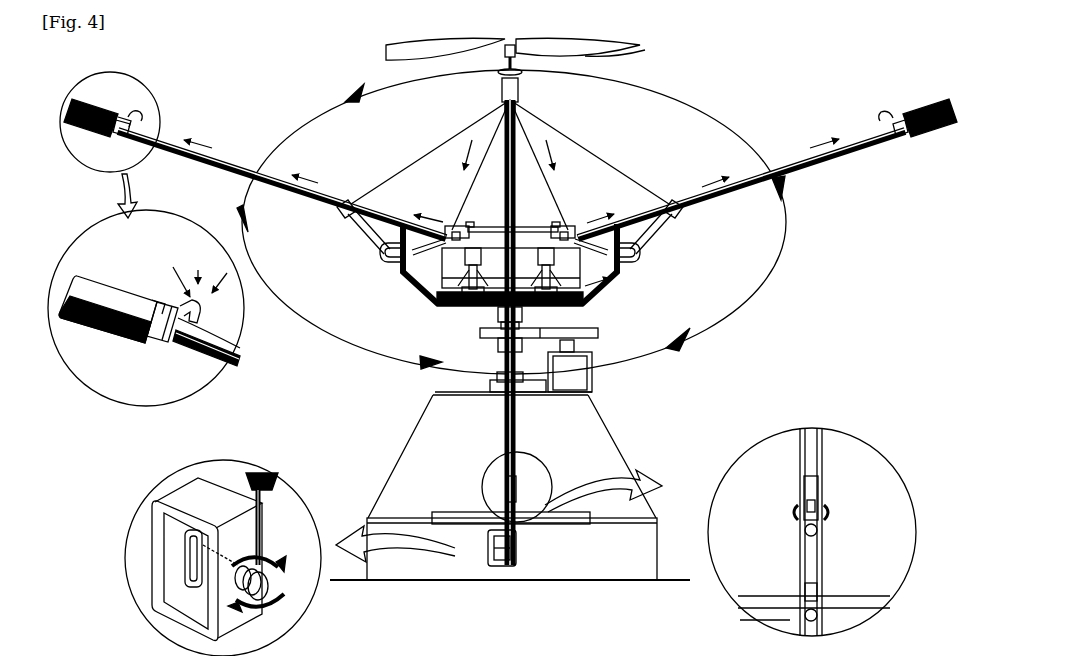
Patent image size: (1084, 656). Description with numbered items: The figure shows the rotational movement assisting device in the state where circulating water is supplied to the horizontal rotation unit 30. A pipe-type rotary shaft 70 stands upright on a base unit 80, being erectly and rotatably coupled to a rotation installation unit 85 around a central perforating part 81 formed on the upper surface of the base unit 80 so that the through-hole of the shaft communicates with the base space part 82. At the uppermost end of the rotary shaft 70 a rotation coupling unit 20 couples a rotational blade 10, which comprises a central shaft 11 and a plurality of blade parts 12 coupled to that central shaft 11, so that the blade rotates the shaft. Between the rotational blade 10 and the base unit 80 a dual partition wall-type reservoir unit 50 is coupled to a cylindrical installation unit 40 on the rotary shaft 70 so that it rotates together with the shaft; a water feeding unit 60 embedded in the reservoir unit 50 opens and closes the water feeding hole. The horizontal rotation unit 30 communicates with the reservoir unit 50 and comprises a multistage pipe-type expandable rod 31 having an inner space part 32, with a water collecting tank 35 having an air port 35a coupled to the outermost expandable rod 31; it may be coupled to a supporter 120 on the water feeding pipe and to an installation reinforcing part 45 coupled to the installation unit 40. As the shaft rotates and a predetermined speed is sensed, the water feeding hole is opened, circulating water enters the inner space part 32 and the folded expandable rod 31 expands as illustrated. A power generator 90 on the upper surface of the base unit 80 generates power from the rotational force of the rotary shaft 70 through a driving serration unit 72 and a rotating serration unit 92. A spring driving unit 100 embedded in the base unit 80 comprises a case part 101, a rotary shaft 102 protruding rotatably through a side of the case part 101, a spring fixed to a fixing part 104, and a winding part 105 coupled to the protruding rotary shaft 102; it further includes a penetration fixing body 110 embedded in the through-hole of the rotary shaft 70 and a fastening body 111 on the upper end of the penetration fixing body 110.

The rotational blade 10 is at (660, 50).
The central shaft 11 is at (585, 145).
The blade parts 12 is at (386, 48).
The rotation coupling unit 20 is at (501, 92).
The horizontal rotation unit 30 is at (955, 128).
The expandable rod 31 is at (226, 162).
The inner space part 32 is at (192, 356).
The water collecting tank 35 is at (125, 290).
The air port 35a is at (200, 322).
The installation unit 40 is at (522, 224).
The installation reinforcing part 45 is at (468, 228).
The reservoir unit 50 is at (617, 290).
The water feeding unit 60 is at (406, 292).
The rotary shaft 70 is at (518, 430).
The driving serration unit 72 is at (478, 333).
The base unit 80 is at (630, 434).
The central perforating part 81 is at (505, 402).
The base space part 82 is at (412, 468).
The rotation installation unit 85 is at (488, 384).
The power generator 90 is at (576, 348).
The rotating serration unit 92 is at (582, 330).
The spring driving unit 100 is at (504, 584).
The case part 101 is at (165, 504).
The rotary shaft 102 is at (170, 540).
The fixing part 104 is at (188, 548).
The winding part 105 is at (345, 583).
The penetration fixing body 110 is at (770, 614).
The fastening body 111 is at (820, 478).
The supporter 120 is at (660, 236).